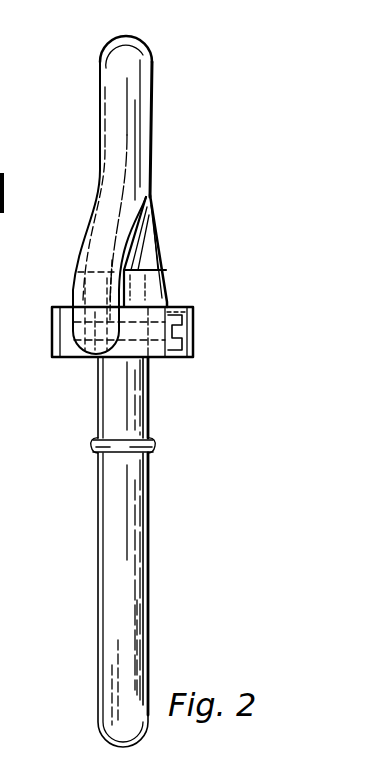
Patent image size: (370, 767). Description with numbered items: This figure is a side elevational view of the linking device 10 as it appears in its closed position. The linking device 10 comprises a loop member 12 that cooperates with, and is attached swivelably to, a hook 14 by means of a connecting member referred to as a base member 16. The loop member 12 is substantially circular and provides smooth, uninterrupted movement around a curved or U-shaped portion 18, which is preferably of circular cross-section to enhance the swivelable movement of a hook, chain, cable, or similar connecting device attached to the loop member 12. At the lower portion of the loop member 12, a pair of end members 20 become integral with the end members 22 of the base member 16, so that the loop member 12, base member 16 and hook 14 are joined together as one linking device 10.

The linking device 10 is at (165, 252).
The loop member 12 is at (154, 116).
The hook 14 is at (152, 552).
The base member 16 is at (191, 341).
The curved or U-shaped portion 18 is at (108, 42).
The end members 20 is at (78, 272).
The end members 22 is at (65, 358).